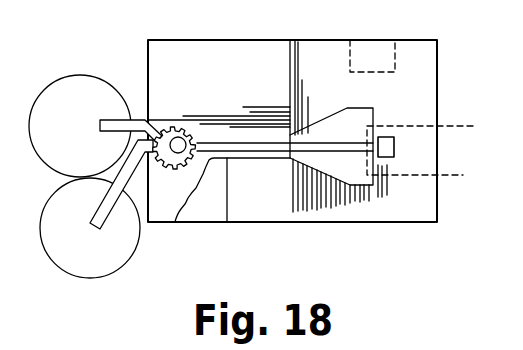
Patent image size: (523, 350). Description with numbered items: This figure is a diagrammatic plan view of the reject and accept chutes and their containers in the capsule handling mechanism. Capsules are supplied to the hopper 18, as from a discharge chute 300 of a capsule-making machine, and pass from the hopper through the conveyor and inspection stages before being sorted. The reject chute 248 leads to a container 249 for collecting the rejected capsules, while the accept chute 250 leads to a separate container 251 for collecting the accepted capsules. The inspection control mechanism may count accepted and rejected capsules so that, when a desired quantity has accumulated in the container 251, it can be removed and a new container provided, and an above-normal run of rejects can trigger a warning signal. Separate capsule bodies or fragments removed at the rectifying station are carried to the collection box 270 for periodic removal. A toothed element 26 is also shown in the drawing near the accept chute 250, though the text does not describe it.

The hopper 18 is at (342, 114).
The gear 26 is at (175, 116).
The reject chute 248 is at (110, 215).
The container 249 is at (124, 265).
The accept chute 250 is at (117, 127).
The container 251 is at (58, 102).
The collection box 270 is at (348, 54).
The discharge chute 300 is at (452, 138).